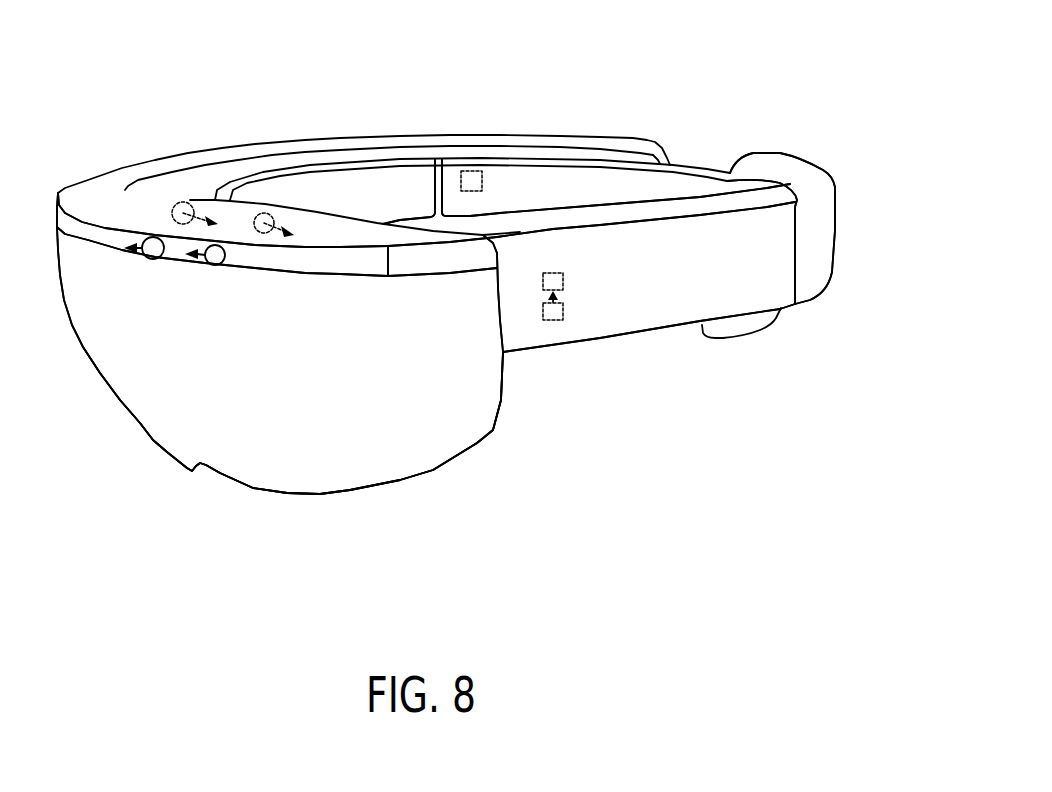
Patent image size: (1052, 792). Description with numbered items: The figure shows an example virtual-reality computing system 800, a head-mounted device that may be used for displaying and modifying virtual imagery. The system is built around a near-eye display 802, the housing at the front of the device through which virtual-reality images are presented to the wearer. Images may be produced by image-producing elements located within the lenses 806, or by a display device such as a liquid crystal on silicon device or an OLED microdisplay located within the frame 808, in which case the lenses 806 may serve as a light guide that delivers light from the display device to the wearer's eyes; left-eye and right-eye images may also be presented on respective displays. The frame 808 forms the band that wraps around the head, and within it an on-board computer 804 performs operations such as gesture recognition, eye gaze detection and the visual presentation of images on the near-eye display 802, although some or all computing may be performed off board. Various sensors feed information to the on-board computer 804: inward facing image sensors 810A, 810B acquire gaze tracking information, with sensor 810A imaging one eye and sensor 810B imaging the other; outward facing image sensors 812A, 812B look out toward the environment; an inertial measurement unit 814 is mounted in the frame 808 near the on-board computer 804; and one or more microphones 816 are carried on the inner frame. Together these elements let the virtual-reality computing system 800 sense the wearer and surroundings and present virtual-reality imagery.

The virtual-reality computing system 800 is at (665, 53).
The near-eye display 802 is at (70, 375).
The on-board computer 804 is at (552, 268).
The lenses 806 is at (147, 437).
The frame 808 is at (528, 352).
The inward facing image sensor 810A is at (263, 234).
The inward facing image sensor 810B is at (172, 210).
The outward facing image sensor 812A is at (215, 266).
The outward facing image sensor 812B is at (153, 259).
The inertial measurement unit 814 is at (565, 312).
The microphones 816 is at (473, 168).